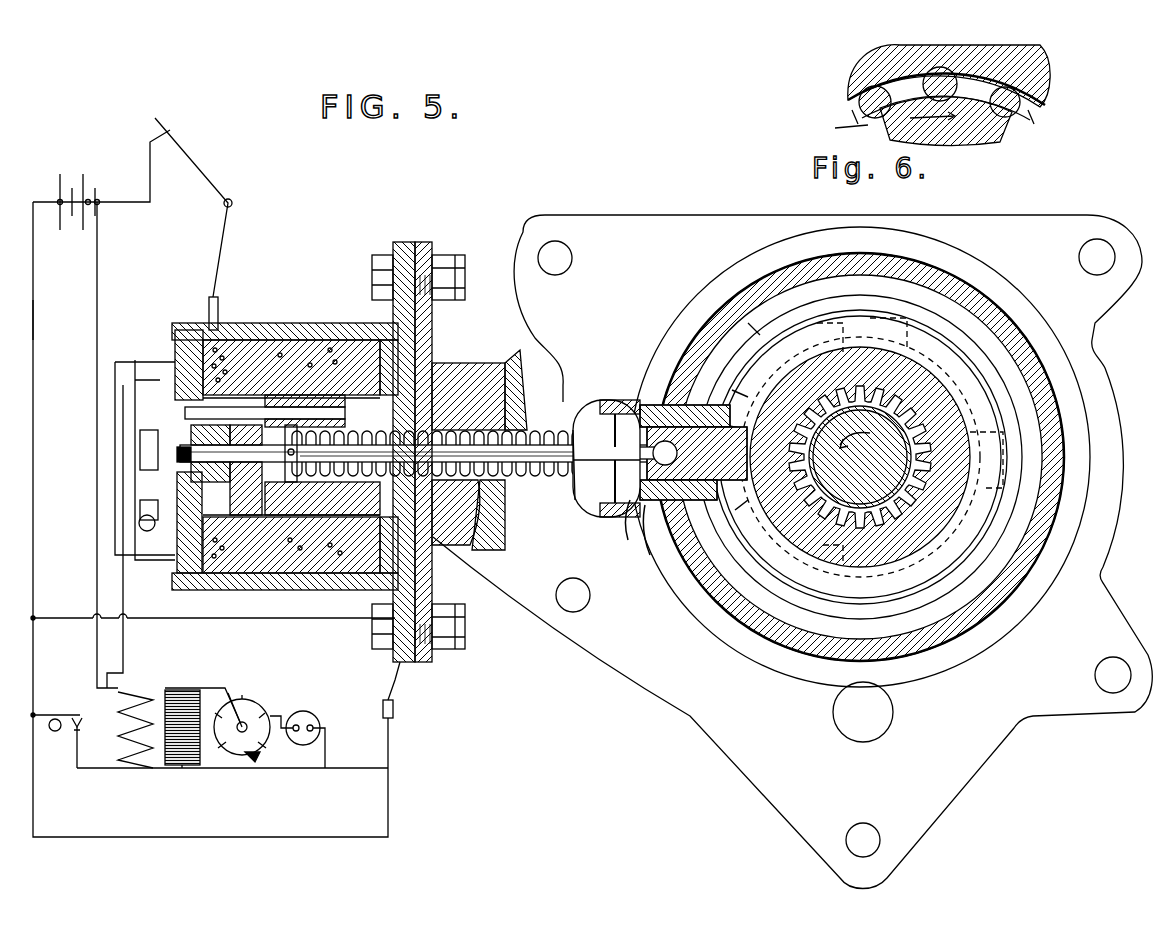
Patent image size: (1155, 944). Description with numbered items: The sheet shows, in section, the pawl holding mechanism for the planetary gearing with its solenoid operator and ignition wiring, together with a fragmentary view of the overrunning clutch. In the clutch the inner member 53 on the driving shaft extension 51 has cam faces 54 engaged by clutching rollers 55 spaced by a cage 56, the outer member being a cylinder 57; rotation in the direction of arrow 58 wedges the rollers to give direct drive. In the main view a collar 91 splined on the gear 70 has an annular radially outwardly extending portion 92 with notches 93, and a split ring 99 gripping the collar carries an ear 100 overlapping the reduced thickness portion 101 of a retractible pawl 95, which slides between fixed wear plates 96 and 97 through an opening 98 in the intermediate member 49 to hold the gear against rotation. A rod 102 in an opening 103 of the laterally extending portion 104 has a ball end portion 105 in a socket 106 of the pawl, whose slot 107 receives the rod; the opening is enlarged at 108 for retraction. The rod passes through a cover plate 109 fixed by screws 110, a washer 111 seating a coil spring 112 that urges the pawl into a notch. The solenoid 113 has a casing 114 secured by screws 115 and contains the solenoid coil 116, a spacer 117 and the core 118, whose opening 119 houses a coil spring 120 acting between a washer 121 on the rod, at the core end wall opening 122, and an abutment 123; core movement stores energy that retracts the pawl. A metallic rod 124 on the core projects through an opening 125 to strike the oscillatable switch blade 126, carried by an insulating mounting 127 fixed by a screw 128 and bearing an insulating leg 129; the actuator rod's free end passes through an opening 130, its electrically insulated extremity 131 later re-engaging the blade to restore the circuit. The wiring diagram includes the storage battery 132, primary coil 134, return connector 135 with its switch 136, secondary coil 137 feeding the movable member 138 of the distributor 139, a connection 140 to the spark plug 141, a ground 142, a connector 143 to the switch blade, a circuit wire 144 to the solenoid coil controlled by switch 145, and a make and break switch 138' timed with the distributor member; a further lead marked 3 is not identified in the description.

In FIG. 5, the wire 3 is at (32, 325).
In FIG. 5, the intermediate member 49 is at (1092, 360).
In FIG. 5, the driving shaft extension 51 is at (860, 457).
In FIG. 6, the inner member 53 is at (1010, 138).
In FIG. 6, the cam faces 54 is at (860, 105).
In FIG. 6, the clutching rollers 55 is at (955, 70).
In FIG. 6, the cage 56 is at (1040, 103).
In FIG. 6, the cylinder 57 is at (1010, 58).
In FIG. 6, the arrow 58 is at (835, 128).
In FIG. 5, the sun gear 70 is at (800, 415).
In FIG. 5, the collar 91 is at (850, 350).
In FIG. 5, the annular radially outwardly extending portion 92 is at (738, 380).
In FIG. 5, the notches 93 is at (780, 350).
In FIG. 5, the retractible pawl 95 is at (628, 505).
In FIG. 5, the fixed wear plate 96 is at (645, 515).
In FIG. 5, the fixed wear plate 97 is at (618, 412).
In FIG. 5, the opening 98 is at (648, 410).
In FIG. 5, the split ring 99 is at (727, 407).
In FIG. 5, the ear 100 is at (725, 412).
In FIG. 5, the reduced thickness portion 101 is at (694, 450).
In FIG. 5, the rod 102 is at (520, 440).
In FIG. 5, the opening 103 is at (495, 395).
In FIG. 5, the laterally extending portion 104 is at (525, 605).
In FIG. 5, the ball end portion 105 is at (655, 415).
In FIG. 5, the socket 106 is at (670, 500).
In FIG. 5, the slot 107 is at (612, 398).
In FIG. 5, the enlargement 108 is at (610, 400).
In FIG. 5, the cover plate 109 is at (425, 350).
In FIG. 5, the screws 110 is at (440, 385).
In FIG. 5, the washer 111 is at (460, 483).
In FIG. 5, the coil spring 112 is at (548, 445).
In FIG. 5, the solenoid 113 is at (222, 325).
In FIG. 5, the casing 114 is at (290, 323).
In FIG. 5, the screws 115 is at (380, 272).
In FIG. 5, the solenoid coil 116 is at (338, 340).
In FIG. 5, the spacer 117 is at (415, 340).
In FIG. 5, the solenoid core 118 is at (398, 395).
In FIG. 5, the opening 119 is at (318, 398).
In FIG. 5, the coil spring 120 is at (365, 440).
In FIG. 5, the washer 121 is at (288, 495).
In FIG. 5, the opening 122 is at (250, 465).
In FIG. 5, the abutment 123 is at (325, 453).
In FIG. 5, the metallic rod 124 is at (291, 367).
In FIG. 5, the opening 125 is at (176, 380).
In FIG. 5, the switch blade 126 is at (176, 470).
In FIG. 5, the insulating mounting 127 is at (176, 572).
In FIG. 5, the screw 128 is at (229, 488).
In FIG. 5, the insulating leg 129 is at (138, 440).
In FIG. 5, the opening 130 is at (240, 420).
In FIG. 5, the insulated extremity 131 is at (204, 451).
In FIG. 5, the storage battery 132 is at (70, 184).
In FIG. 5, the primary coil 134 is at (140, 772).
In FIG. 5, the return connector 135 is at (140, 470).
In FIG. 5, the switch 136 is at (118, 380).
In FIG. 5, the secondary coil 137 is at (185, 768).
In FIG. 5, the movable member 138 is at (265, 718).
In FIG. 5, the make and break switch 138' is at (58, 724).
In FIG. 5, the distributor 139 is at (250, 757).
In FIG. 5, the connection 140 is at (289, 733).
In FIG. 5, the spark plug 141 is at (312, 722).
In FIG. 5, the ground 142 is at (396, 722).
In FIG. 5, the connector 143 is at (125, 655).
In FIG. 5, the circuit wire 144 is at (52, 620).
In FIG. 5, the switch 145 is at (192, 137).